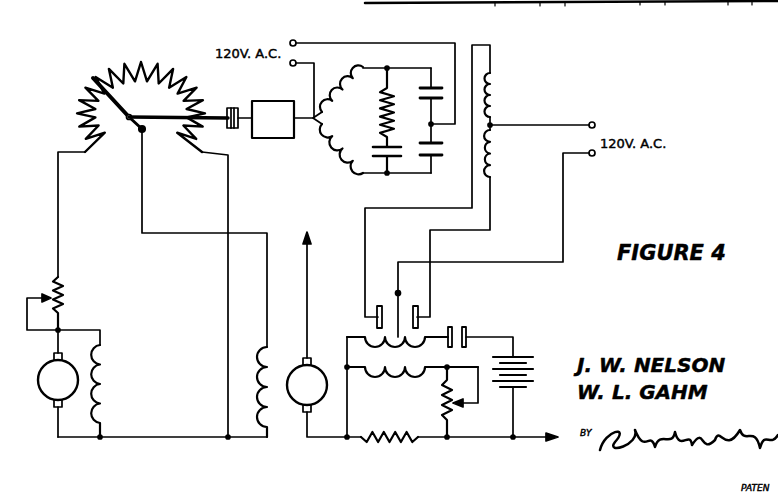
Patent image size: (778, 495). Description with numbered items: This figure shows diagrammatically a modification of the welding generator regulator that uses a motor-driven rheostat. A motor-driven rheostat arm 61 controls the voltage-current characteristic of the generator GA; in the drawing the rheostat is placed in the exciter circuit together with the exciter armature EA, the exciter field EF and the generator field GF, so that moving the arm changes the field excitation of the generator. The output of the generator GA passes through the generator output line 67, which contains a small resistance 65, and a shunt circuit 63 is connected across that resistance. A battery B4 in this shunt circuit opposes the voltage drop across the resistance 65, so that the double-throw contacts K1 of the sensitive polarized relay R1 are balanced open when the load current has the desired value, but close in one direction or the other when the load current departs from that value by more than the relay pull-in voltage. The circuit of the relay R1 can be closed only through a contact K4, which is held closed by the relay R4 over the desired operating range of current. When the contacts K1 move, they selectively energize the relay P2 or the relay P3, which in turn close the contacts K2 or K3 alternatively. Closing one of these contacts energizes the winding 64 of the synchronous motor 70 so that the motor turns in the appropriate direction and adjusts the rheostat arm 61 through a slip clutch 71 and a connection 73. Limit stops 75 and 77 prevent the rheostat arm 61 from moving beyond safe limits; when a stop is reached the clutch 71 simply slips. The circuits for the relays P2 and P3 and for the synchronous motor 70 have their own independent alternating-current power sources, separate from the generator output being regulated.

The rheostat arm 61 is at (119, 118).
The shunt circuit 63 is at (349, 413).
The coil winding 64 is at (331, 153).
The small resistance 65 is at (400, 444).
The generator output line 67 is at (488, 440).
The synchronous motor 70 is at (273, 101).
The slip clutch 71 is at (232, 107).
The connection 73 is at (171, 122).
The limit stop 75 is at (180, 70).
The limit stop 77 is at (82, 112).
The relay R4 is at (65, 300).
The sensitive polarized relay R1 is at (372, 334).
The double-throw contacts K1 is at (420, 308).
The relay-operated contact K2 is at (438, 158).
The relay-operated contact K3 is at (426, 100).
The contact K4 is at (467, 332).
The relay P2 is at (495, 90).
The relay P3 is at (496, 178).
The battery B4 is at (535, 366).
The exciter armature EA is at (57, 383).
The exciter field EF is at (103, 385).
The generator field GF is at (262, 384).
The generator GA is at (317, 334).